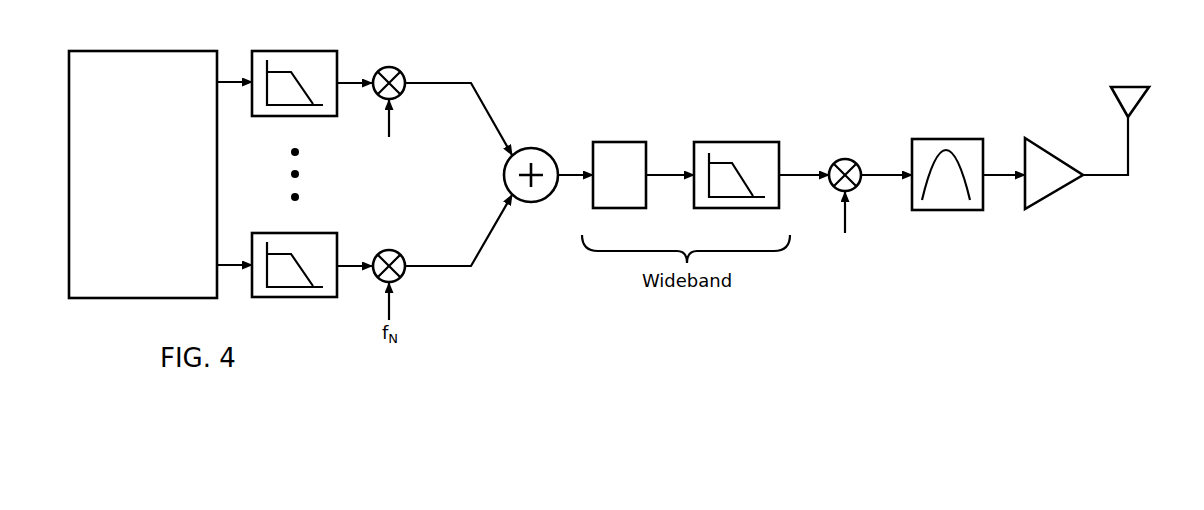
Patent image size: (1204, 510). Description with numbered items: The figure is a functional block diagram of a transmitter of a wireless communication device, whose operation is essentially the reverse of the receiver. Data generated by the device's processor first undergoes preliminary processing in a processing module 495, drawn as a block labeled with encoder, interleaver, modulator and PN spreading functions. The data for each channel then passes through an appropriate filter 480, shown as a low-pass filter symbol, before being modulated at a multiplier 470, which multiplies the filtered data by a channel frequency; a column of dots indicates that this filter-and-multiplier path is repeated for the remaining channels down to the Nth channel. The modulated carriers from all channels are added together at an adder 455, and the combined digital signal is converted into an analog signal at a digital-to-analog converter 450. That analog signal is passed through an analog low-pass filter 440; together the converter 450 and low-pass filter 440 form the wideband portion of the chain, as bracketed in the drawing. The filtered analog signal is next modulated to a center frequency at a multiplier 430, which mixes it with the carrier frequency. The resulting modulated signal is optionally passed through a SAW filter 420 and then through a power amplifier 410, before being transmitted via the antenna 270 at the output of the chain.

The processing module 495 is at (155, 51).
The filter 480 is at (287, 51).
The multiplier 470 is at (397, 68).
The adder 455 is at (528, 148).
The digital-to-analog converter 450 is at (619, 208).
The analog low-pass filter 440 is at (732, 208).
The multiplier 430 is at (845, 158).
The SAW filter 420 is at (942, 210).
The power amplifier 410 is at (1052, 193).
The antenna 270 is at (1128, 130).